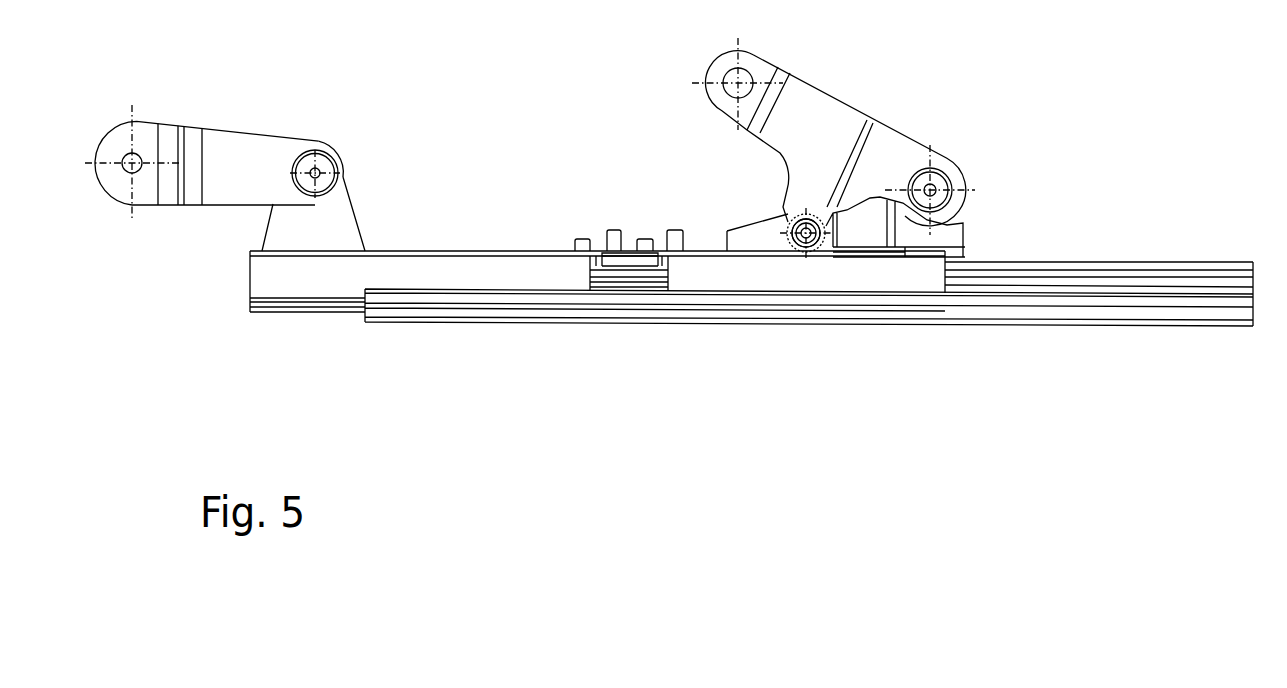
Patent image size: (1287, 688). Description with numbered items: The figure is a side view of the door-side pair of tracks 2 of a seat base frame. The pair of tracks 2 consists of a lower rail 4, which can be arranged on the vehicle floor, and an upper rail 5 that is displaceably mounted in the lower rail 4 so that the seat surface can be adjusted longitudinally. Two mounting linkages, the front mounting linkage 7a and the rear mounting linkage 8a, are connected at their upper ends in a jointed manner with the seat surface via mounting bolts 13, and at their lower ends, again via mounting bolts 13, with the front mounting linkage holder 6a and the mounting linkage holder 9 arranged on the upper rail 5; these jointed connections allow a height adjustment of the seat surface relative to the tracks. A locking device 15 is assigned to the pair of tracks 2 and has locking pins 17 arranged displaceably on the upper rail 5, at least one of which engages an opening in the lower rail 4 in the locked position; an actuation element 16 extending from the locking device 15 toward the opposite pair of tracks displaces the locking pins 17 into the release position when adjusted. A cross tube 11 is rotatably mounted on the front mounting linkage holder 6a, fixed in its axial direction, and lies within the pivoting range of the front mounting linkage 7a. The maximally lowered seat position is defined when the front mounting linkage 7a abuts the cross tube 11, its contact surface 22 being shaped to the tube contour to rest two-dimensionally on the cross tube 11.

The pair of tracks 2 is at (751, 334).
The lower rail 4 is at (1203, 283).
The upper rail 5 is at (312, 275).
The front mounting linkage holder 6a is at (950, 238).
The front mounting linkage 7a is at (862, 143).
The mounting linkage 8a is at (227, 158).
The mounting linkage holder 9 is at (285, 227).
The cross tube 11 is at (820, 238).
The mounting bolt 13 is at (325, 167).
The locking device 15 is at (628, 210).
The actuation element 16 is at (625, 255).
The locking pin 17 is at (682, 223).
The contact surface 22 is at (807, 215).